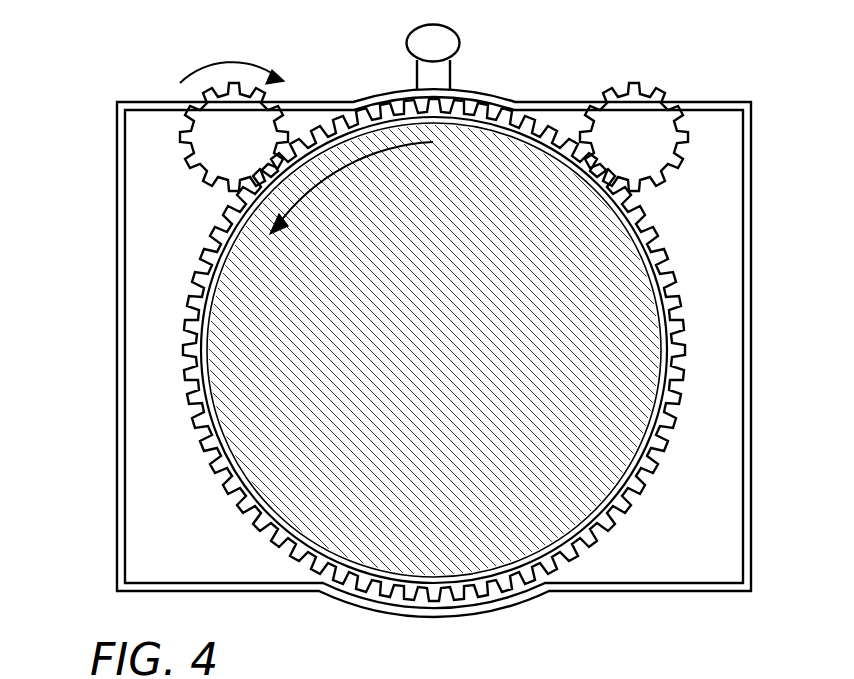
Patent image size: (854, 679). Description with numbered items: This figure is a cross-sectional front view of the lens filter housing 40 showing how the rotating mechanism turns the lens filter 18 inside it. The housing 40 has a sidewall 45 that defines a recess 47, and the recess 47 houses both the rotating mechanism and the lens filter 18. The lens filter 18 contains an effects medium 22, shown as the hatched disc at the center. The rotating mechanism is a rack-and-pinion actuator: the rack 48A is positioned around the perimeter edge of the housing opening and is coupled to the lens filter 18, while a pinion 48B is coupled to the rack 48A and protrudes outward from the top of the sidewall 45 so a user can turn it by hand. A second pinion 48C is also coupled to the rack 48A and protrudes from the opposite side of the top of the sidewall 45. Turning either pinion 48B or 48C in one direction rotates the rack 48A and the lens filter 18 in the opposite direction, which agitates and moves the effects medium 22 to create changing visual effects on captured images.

The lens filter housing 40 is at (742, 68).
The sidewall 45 is at (752, 372).
The recess 47 is at (685, 550).
The lens filter 18 is at (205, 300).
The effects medium 22 is at (478, 550).
The rack 48A is at (555, 135).
The pinion 48B is at (229, 86).
The second pinion 48C is at (637, 83).